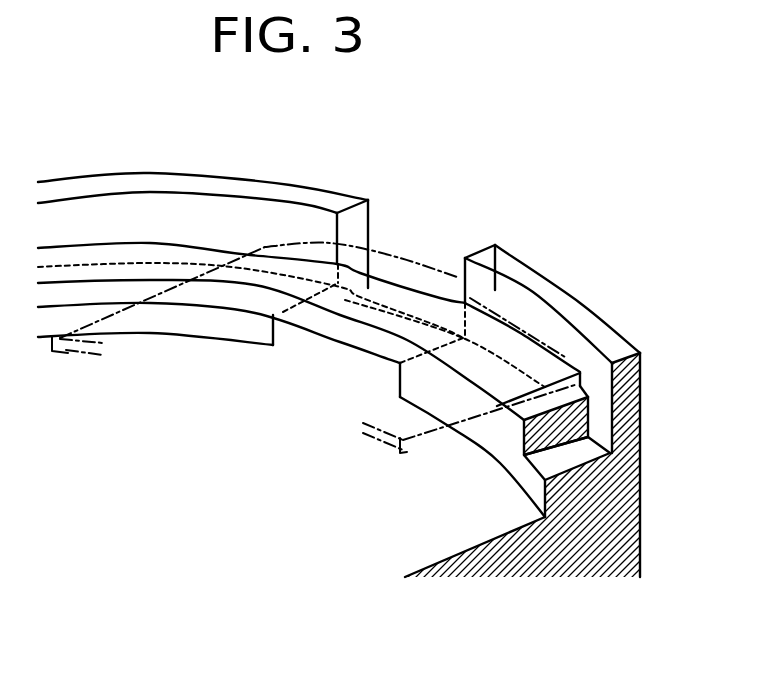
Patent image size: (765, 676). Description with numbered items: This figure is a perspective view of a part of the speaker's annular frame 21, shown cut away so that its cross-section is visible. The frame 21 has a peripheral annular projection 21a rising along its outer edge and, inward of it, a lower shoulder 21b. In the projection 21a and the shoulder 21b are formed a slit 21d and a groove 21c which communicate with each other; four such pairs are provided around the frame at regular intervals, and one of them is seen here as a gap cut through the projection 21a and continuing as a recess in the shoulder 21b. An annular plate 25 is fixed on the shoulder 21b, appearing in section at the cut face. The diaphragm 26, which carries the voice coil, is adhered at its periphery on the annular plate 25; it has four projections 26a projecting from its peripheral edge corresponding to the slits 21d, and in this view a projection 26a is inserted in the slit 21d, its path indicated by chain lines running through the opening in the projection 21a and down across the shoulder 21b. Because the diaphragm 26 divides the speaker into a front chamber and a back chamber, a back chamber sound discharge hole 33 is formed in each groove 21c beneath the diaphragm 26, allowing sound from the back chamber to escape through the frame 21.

The frame 21 is at (312, 157).
The peripheral annular projection 21a is at (532, 287).
The shoulder 21b is at (562, 455).
The groove 21c is at (268, 350).
The slit 21d is at (368, 210).
The annular plate 25 is at (585, 410).
The diaphragm 26 is at (432, 443).
The projection 26a is at (397, 253).
The back chamber sound discharge hole 33 is at (332, 352).